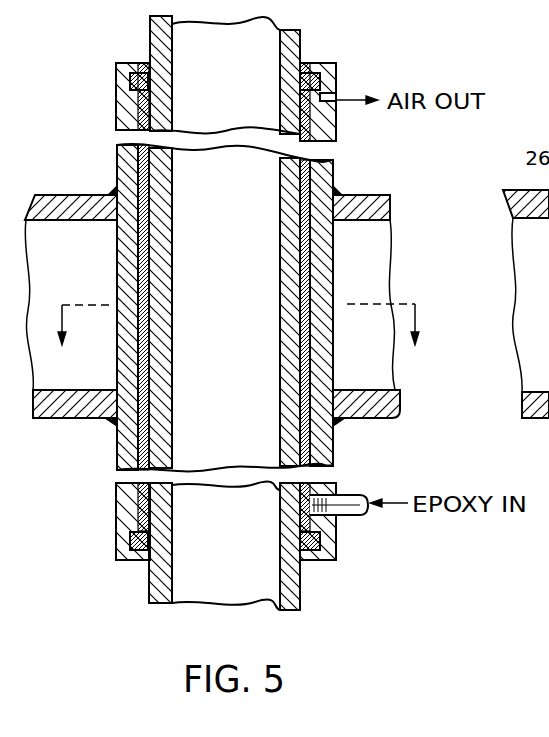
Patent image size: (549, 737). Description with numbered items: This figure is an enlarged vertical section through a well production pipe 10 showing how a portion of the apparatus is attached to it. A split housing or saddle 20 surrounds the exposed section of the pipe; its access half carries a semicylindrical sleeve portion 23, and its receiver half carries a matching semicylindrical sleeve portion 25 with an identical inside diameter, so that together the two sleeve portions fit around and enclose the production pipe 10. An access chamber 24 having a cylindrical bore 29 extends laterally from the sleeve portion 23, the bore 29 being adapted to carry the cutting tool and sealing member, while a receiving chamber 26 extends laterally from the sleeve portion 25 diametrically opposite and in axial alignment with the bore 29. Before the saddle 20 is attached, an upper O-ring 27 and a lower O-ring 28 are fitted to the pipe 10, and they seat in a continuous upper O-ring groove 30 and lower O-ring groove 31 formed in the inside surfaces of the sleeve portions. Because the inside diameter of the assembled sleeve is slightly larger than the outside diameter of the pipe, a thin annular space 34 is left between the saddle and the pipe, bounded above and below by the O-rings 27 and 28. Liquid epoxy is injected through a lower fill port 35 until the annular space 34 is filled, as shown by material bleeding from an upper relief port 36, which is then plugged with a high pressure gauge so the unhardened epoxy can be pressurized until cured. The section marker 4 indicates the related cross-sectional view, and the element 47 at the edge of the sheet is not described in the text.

The tube 10 is at (295, 52).
The joint assembly 20 is at (212, 307).
The sleeve 23 is at (318, 190).
The flange plate 24 is at (385, 418).
The flange plate 25 is at (535, 386).
The flange plate 26 is at (63, 418).
The end fitting 27 is at (233, 102).
The end fitting 28 is at (227, 550).
The flange plate 29 is at (372, 221).
The O-ring seal 30 is at (136, 80).
The O-ring seal 31 is at (130, 561).
The epoxy layer 34 is at (298, 242).
The epoxy inlet 35 is at (355, 516).
The air outlet 36 is at (336, 106).
The pipe wall 47 is at (530, 305).
The section line 4 is at (236, 339).